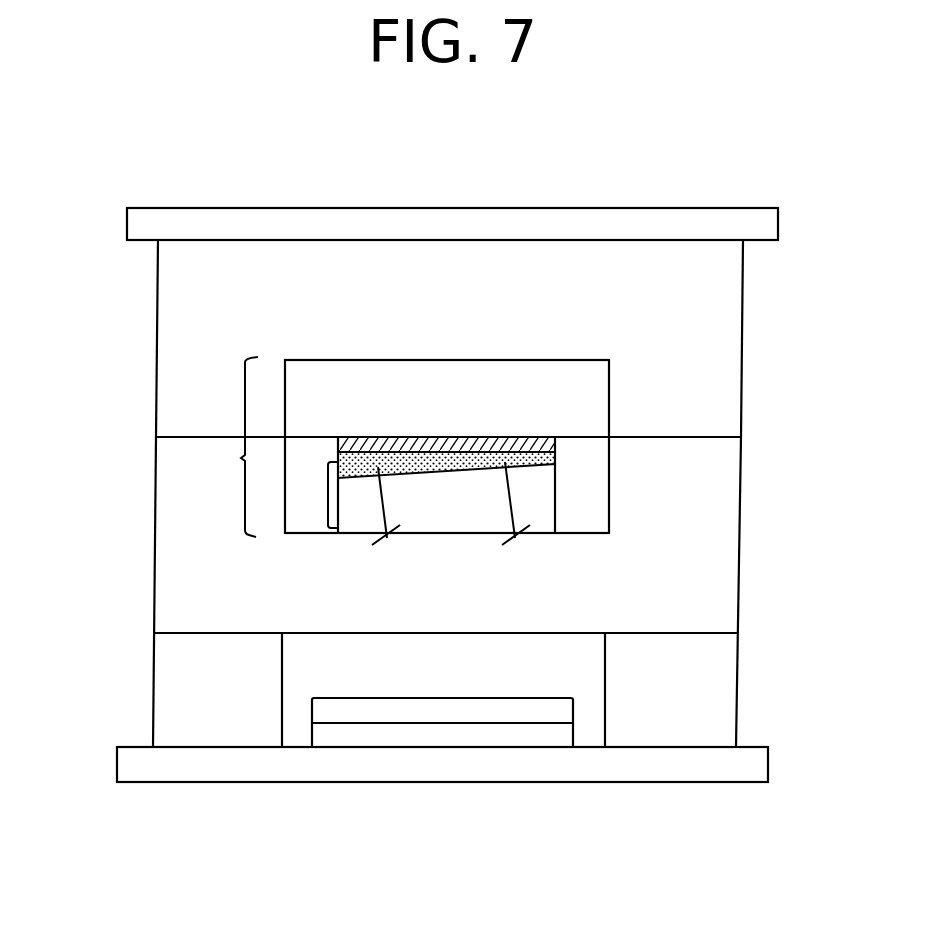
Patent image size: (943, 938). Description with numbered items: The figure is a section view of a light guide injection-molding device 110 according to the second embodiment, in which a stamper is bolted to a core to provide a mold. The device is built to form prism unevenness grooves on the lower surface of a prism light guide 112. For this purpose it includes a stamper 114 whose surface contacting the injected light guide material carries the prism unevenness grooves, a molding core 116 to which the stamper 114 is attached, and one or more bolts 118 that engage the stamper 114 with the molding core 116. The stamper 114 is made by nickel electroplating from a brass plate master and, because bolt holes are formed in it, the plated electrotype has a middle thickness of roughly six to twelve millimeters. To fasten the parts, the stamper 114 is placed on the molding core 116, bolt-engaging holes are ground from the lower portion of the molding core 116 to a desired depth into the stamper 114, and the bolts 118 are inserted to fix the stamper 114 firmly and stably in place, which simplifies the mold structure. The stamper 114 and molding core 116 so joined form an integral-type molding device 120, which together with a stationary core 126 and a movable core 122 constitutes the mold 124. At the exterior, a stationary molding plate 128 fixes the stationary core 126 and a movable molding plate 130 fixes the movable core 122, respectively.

The light guide injection-molding device 110 is at (278, 135).
The prism light guide 112 is at (366, 437).
The stamper 114 is at (560, 457).
The molding core 116 is at (522, 500).
The bolts 118 is at (397, 535).
The integral-type molding device 120 is at (327, 503).
The movable core 122 is at (298, 520).
The mold 124 is at (243, 458).
The stationary core 126 is at (453, 382).
The stationary molding plate 128 is at (172, 347).
The movable molding plate 130 is at (168, 548).